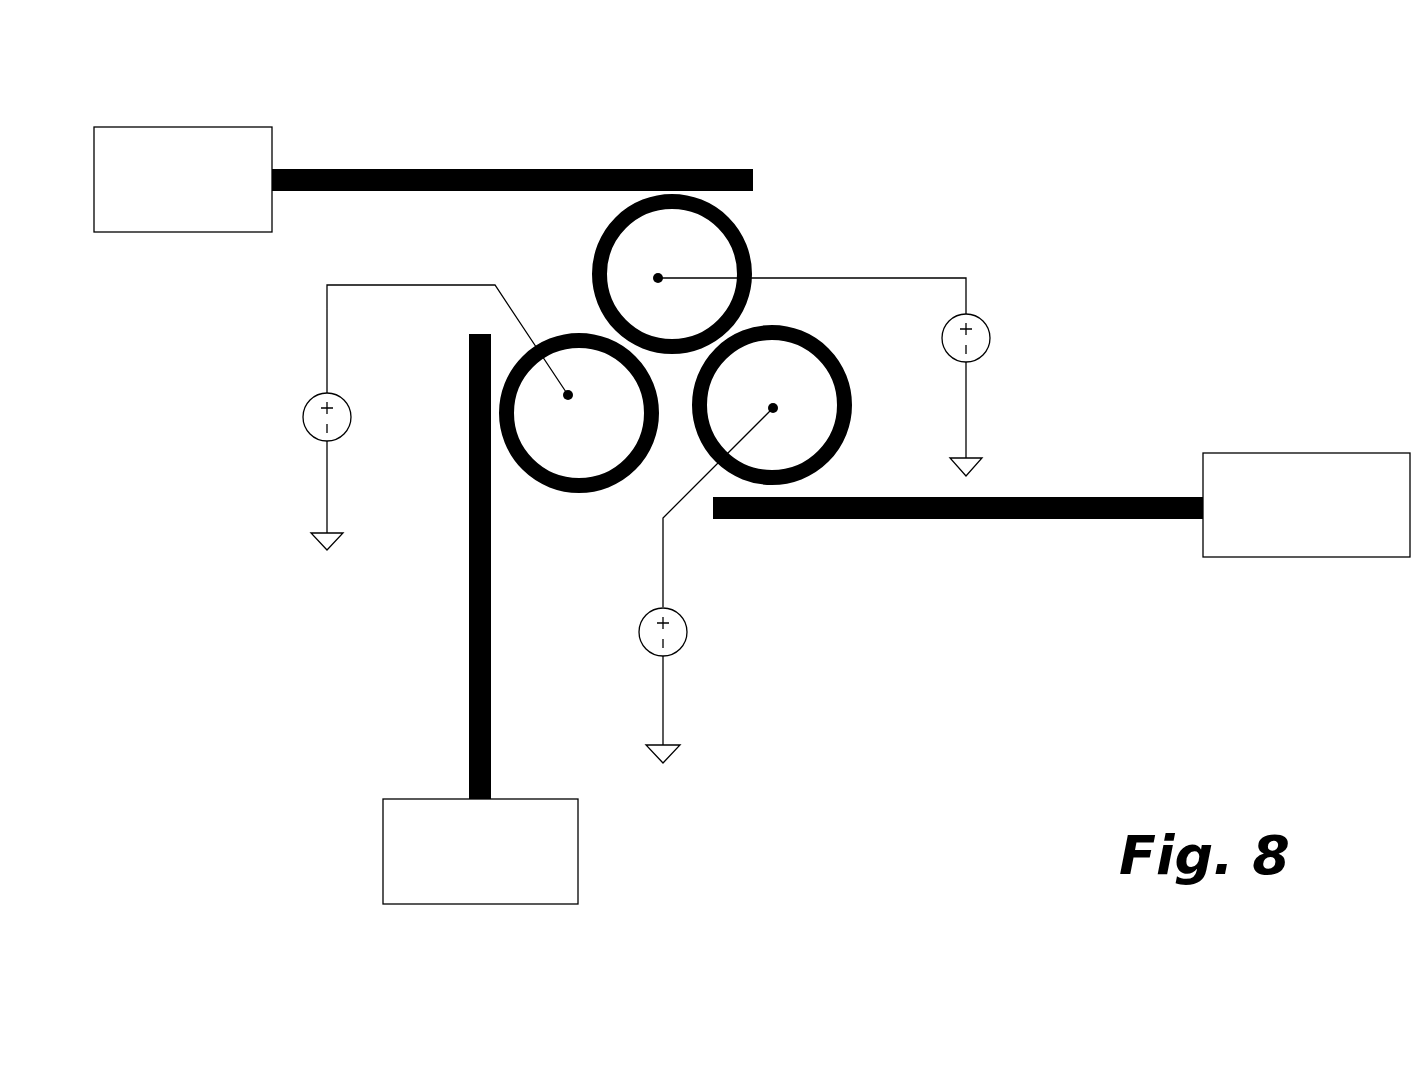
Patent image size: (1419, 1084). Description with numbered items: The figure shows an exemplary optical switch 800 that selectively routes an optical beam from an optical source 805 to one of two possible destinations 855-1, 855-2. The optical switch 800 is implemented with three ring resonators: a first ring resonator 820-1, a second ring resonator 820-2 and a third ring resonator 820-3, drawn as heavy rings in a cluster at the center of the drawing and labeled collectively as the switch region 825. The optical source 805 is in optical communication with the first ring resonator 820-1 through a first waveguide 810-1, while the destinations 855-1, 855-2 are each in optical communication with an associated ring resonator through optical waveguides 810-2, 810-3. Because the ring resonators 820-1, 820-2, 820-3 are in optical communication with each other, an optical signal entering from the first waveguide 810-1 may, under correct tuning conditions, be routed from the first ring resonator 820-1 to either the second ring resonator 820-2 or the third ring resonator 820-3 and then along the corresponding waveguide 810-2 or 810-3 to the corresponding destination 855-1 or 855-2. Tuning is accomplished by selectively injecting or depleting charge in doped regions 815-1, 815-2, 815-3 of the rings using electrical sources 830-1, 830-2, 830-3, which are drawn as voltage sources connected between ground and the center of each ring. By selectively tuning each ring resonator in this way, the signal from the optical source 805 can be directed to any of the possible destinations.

The optical switch 800 is at (236, 606).
The optical source 805 is at (133, 207).
The first waveguide 810-1 is at (356, 169).
The optical waveguide 810-2 is at (469, 710).
The optical waveguide 810-3 is at (1085, 519).
The doped region 815-1 is at (668, 230).
The doped region 815-2 is at (588, 373).
The doped region 815-3 is at (807, 420).
The first ring resonator 820-1 is at (743, 235).
The second ring resonator 820-2 is at (574, 496).
The third ring resonator 820-3 is at (820, 467).
The optical switch 825 is at (1088, 430).
The electrical source 830-1 is at (279, 406).
The electrical source 830-2 is at (694, 632).
The electrical source 830-3 is at (996, 333).
The destination 855-1 is at (415, 882).
The destination 855-2 is at (1313, 540).